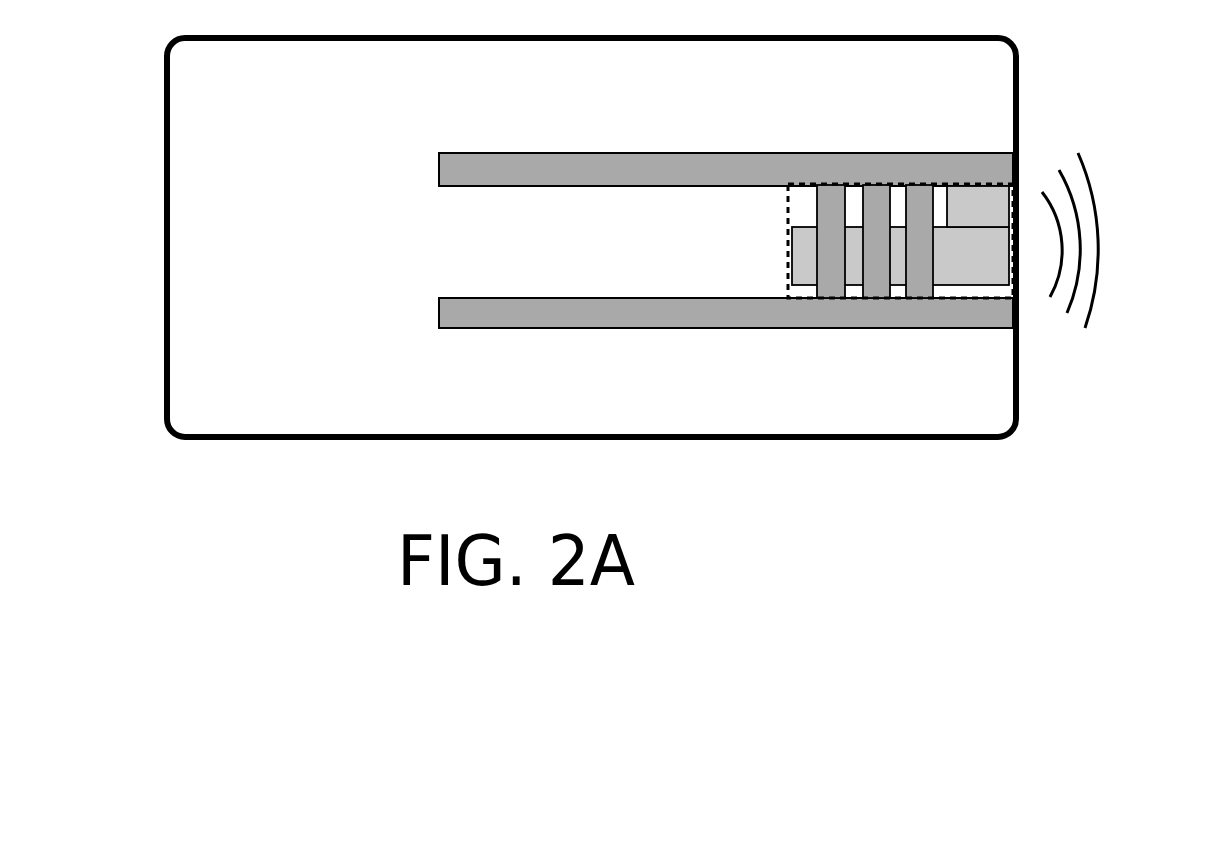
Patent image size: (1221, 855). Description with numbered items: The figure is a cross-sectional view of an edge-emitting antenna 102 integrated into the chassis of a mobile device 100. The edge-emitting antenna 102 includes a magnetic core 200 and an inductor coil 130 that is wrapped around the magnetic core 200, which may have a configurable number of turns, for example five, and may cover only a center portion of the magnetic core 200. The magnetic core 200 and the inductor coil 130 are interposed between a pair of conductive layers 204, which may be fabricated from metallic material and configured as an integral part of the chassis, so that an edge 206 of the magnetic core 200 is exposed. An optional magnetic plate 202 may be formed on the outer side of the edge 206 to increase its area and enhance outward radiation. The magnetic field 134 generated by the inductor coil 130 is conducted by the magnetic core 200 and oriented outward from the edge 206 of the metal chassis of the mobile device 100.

The mobile device 100 is at (610, 424).
The edge-emitting antenna 102 is at (713, 218).
The inductor coil 130 is at (832, 185).
The magnetic field 134 is at (1127, 240).
The magnetic core 200 is at (992, 264).
The magnetic plate 202 is at (995, 219).
The pair of conductive layers 204 is at (439, 311).
The edge 206 is at (1063, 280).